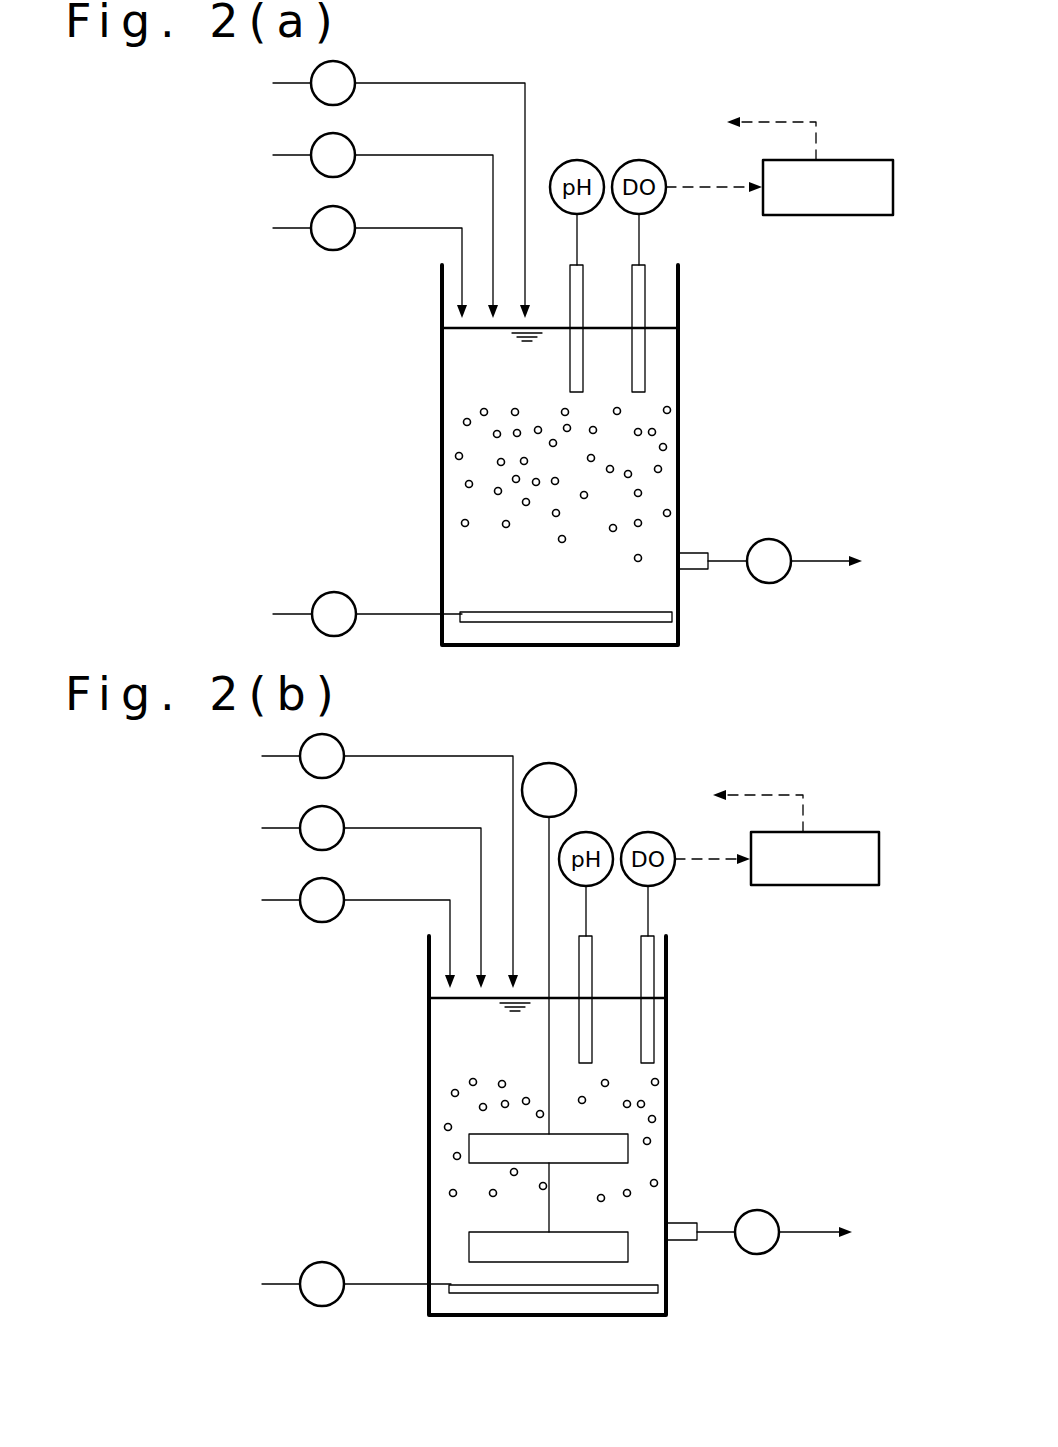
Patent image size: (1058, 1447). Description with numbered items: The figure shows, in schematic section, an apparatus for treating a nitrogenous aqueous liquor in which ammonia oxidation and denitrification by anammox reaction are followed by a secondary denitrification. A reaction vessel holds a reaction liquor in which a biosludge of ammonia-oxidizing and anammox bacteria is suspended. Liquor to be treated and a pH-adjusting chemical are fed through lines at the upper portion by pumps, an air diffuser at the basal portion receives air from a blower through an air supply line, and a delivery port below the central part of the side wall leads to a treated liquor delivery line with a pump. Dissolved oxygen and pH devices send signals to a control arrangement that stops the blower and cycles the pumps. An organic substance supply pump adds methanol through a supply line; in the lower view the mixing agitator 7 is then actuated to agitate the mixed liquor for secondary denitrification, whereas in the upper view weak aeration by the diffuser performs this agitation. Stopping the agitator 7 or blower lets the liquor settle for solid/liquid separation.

The mixing agitator 7 is at (468, 1147).